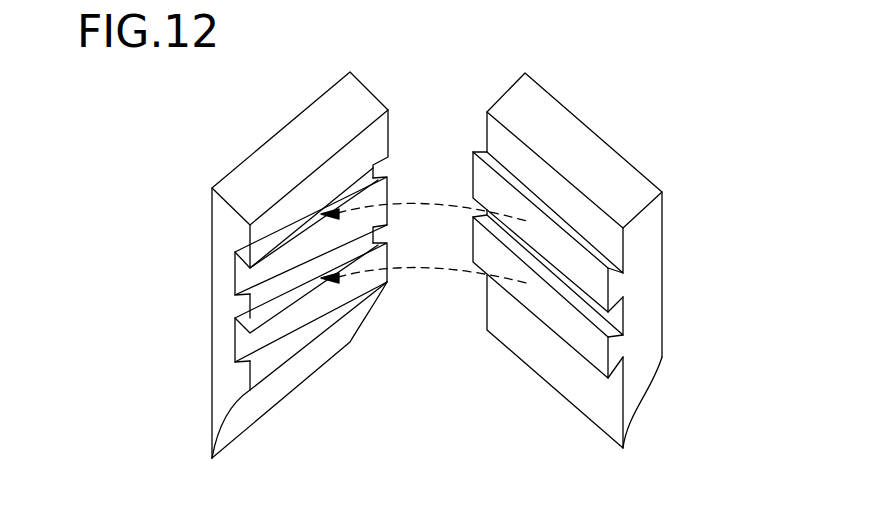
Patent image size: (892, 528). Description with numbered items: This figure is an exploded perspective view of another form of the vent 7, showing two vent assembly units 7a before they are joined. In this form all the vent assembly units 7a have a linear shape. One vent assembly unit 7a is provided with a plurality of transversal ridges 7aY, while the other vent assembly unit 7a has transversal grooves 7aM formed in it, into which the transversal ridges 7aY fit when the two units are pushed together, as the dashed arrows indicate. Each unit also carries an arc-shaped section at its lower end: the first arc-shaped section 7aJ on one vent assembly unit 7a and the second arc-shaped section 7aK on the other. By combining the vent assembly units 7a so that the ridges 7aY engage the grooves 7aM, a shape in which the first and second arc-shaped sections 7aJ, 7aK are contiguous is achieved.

The terminal member 7 is at (183, 433).
The vent assembly unit 7a is at (223, 304).
The transversal grooves 7aM is at (236, 276).
The transversal ridges 7aY is at (562, 253).
The second arc-shaped section 7aK is at (270, 393).
The first arc-shaped section 7aJ is at (640, 380).